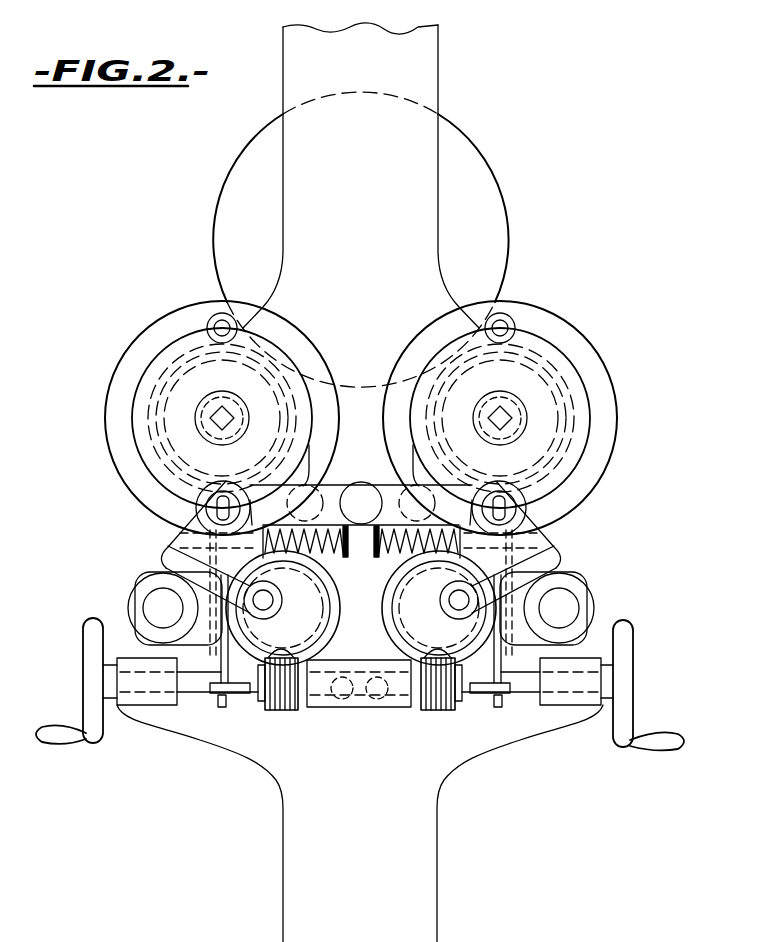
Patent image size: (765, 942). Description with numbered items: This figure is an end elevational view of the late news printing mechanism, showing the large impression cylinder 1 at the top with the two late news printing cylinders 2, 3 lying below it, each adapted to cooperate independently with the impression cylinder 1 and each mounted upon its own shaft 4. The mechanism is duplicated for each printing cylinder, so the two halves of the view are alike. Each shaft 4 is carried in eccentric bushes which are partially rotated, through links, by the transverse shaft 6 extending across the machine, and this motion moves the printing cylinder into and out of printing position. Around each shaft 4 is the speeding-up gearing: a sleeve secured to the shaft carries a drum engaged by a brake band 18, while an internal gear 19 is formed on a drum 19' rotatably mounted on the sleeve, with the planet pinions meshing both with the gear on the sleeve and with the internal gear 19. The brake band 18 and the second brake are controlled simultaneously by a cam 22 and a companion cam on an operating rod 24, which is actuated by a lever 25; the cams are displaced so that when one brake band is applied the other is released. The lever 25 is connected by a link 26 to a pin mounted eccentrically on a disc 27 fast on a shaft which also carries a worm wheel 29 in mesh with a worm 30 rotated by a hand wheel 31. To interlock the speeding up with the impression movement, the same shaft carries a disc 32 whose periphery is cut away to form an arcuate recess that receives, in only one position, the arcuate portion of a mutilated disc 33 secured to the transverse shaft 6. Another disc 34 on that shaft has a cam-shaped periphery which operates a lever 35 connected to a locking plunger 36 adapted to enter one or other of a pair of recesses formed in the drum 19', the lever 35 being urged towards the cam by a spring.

The impression cylinder 1 is at (496, 188).
The late news printing cylinder 2 is at (150, 404).
The late news printing cylinder 3 is at (575, 368).
The shaft 4 is at (237, 428).
The transverse shaft 6 is at (361, 608).
The brake band 18 is at (168, 419).
The internal gear 19 is at (380, 389).
The drum 19' is at (343, 411).
The cam 22 is at (224, 492).
The operating rod 24 is at (182, 511).
The lever 25 is at (177, 517).
The link 26 is at (186, 573).
The disc 27 is at (361, 600).
The worm wheel 29 is at (406, 600).
The worm 30 is at (284, 714).
The hand wheel 31 is at (82, 640).
The disc 32 is at (392, 545).
The mutilated disc 33 is at (203, 628).
The disc 34 is at (420, 630).
The lever 35 is at (238, 695).
The locking plunger 36 is at (219, 660).